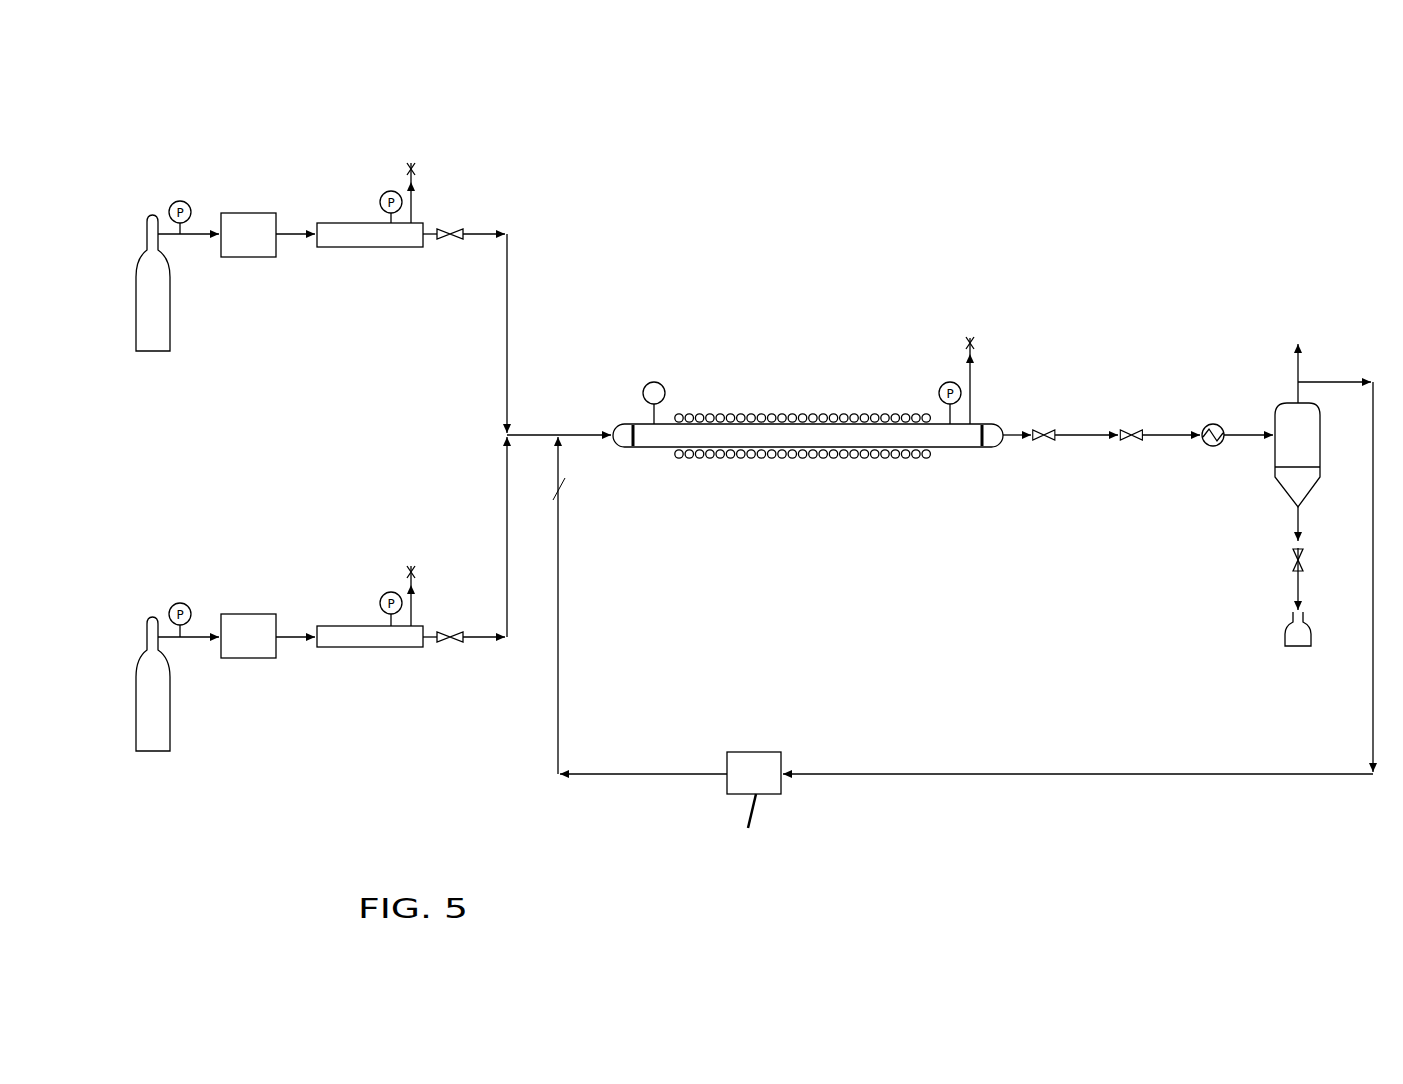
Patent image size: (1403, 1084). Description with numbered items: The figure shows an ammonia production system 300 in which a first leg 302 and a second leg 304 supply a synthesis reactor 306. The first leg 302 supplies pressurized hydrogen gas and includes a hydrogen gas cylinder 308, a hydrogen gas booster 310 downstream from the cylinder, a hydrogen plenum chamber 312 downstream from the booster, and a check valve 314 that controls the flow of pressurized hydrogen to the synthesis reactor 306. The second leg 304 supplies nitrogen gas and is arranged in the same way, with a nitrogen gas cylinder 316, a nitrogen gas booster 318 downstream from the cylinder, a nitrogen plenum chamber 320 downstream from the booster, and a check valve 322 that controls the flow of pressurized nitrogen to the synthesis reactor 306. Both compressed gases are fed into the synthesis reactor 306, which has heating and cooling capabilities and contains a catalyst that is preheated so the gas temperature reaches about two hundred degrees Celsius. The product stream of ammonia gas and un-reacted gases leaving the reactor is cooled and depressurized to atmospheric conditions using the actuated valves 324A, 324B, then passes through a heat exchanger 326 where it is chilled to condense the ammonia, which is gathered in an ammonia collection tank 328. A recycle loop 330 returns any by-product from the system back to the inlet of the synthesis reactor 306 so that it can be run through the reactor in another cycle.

The ammonia production system 300 is at (767, 305).
The first leg 302 is at (298, 283).
The second leg 304 is at (294, 592).
The synthesis reactor 306 is at (655, 447).
The hydrogen gas cylinder 308 is at (152, 340).
The hydrogen gas booster 310 is at (234, 213).
The hydrogen plenum chamber 312 is at (346, 223).
The check valve 314 is at (459, 209).
The nitrogen gas cylinder 316 is at (152, 743).
The nitrogen gas booster 318 is at (245, 658).
The nitrogen plenum chamber 320 is at (368, 648).
The check valve 322 is at (451, 663).
The actuated valve 324A is at (1043, 453).
The actuated valve 324B is at (1132, 453).
The heat exchanger 326 is at (1214, 455).
The ammonia collection tank 328 is at (1287, 645).
The recycle loop 330 is at (873, 772).